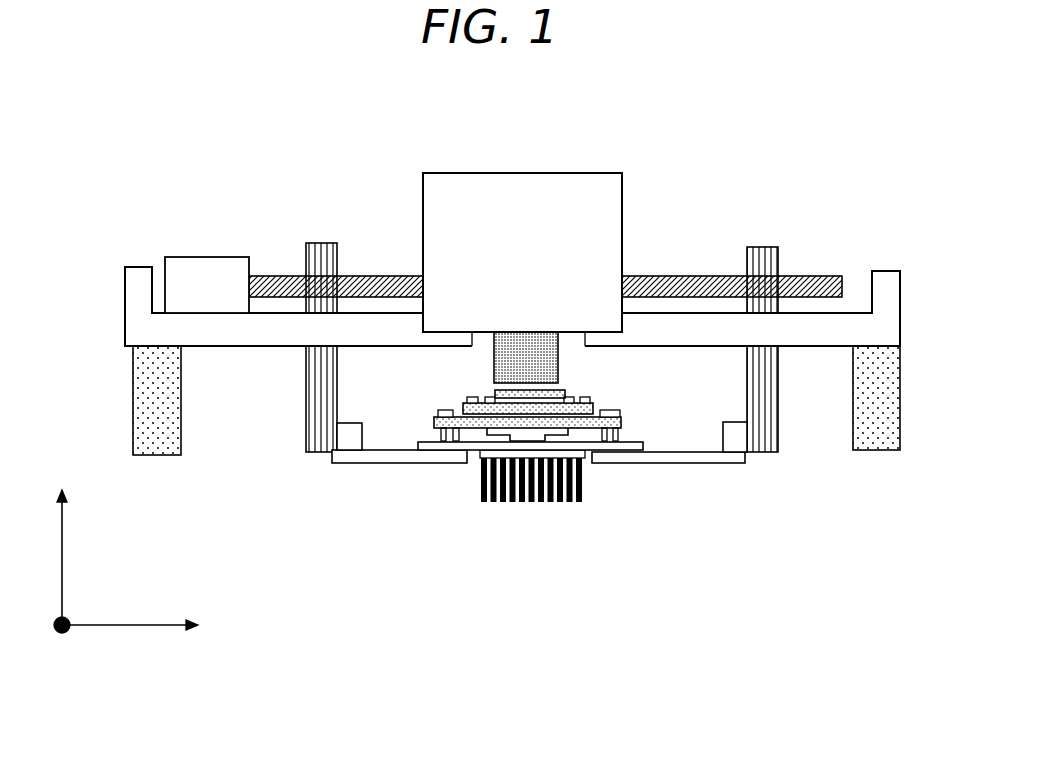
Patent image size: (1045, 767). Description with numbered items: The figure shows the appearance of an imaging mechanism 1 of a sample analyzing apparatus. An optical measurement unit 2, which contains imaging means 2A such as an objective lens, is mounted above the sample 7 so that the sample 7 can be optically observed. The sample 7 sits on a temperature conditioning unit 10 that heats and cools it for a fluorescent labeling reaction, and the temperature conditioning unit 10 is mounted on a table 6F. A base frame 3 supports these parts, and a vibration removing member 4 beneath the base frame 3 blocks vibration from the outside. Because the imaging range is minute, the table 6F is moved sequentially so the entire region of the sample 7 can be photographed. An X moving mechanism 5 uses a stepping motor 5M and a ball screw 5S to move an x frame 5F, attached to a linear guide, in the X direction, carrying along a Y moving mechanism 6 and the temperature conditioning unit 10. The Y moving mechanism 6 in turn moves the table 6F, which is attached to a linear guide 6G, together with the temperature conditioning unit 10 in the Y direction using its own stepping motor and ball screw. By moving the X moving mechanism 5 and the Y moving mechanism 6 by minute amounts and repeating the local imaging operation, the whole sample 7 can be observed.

The imaging mechanism 1 is at (276, 128).
The optical measurement unit 2 is at (418, 178).
The imaging means 2A is at (494, 363).
The base frame 3 is at (135, 290).
The vibration removing member 4 is at (158, 455).
The X moving mechanism 5 is at (286, 251).
The stepping motor 5M is at (208, 269).
The ball screw 5S is at (673, 276).
The x frame 5F is at (325, 443).
The Y moving mechanism 6 is at (670, 452).
The table 6F is at (410, 459).
The linear guide 6G is at (352, 443).
The sample 7 is at (528, 390).
The temperature conditioning unit 10 is at (535, 504).